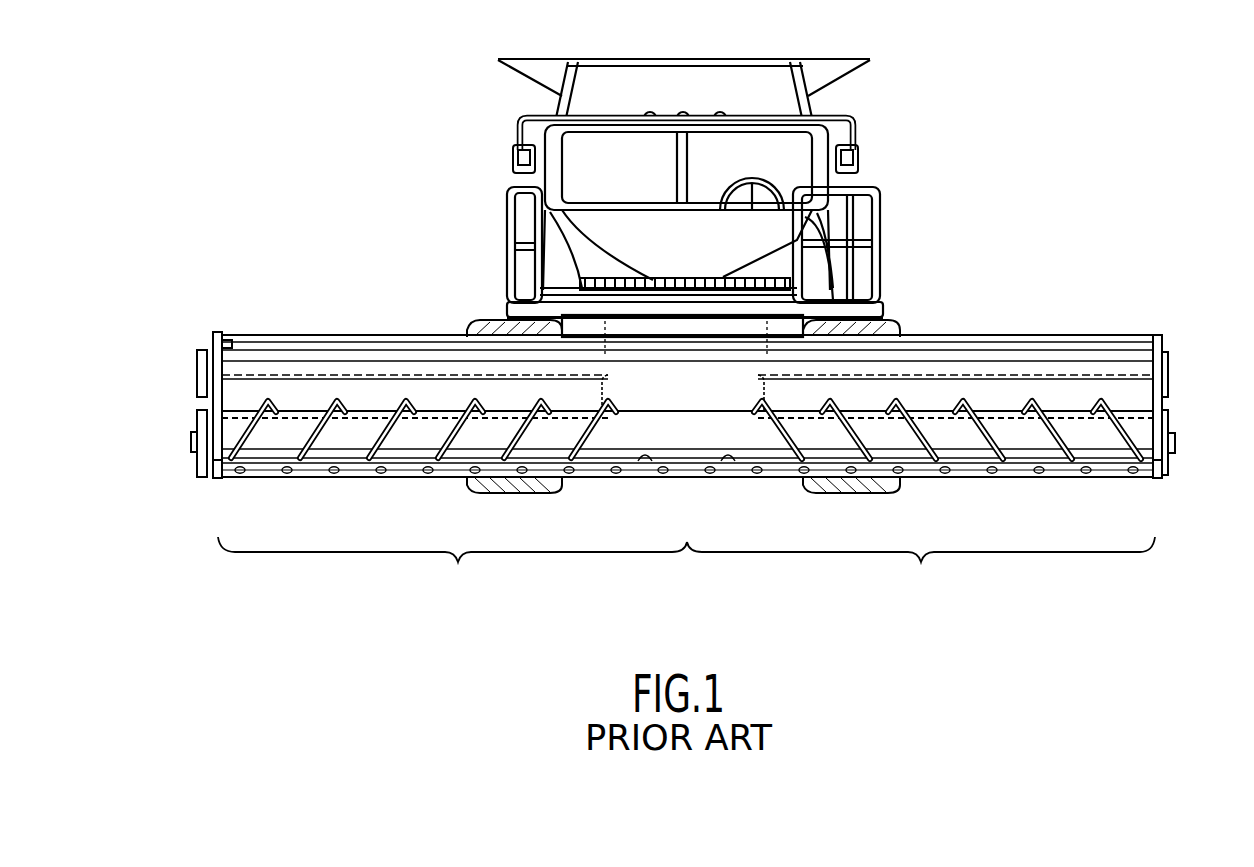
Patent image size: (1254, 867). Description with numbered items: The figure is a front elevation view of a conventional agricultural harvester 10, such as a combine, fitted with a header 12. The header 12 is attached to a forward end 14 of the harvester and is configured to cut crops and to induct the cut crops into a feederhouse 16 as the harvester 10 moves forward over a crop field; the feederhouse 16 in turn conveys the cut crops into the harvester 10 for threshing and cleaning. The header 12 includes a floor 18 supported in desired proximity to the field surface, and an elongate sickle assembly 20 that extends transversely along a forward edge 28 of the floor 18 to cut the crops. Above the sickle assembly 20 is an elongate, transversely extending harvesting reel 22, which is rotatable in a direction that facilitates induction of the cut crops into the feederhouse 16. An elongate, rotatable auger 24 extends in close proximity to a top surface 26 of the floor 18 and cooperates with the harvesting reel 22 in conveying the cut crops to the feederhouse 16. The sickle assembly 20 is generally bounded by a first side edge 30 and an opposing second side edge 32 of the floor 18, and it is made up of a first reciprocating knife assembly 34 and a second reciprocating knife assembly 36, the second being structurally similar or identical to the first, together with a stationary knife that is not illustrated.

The agricultural harvester 10 is at (340, 76).
The header 12 is at (185, 364).
The forward end 14 is at (512, 311).
The feederhouse 16 is at (770, 333).
The floor 18 is at (347, 450).
The sickle assembly 20 is at (1043, 473).
The harvesting reel 22 is at (1162, 340).
The auger 24 is at (1128, 410).
The top surface 26 is at (270, 460).
The forward edge 28 is at (410, 467).
The first side edge 30 is at (200, 462).
The second side edge 32 is at (1167, 462).
The first reciprocating knife assembly 34 is at (452, 566).
The second reciprocating knife assembly 36 is at (921, 566).